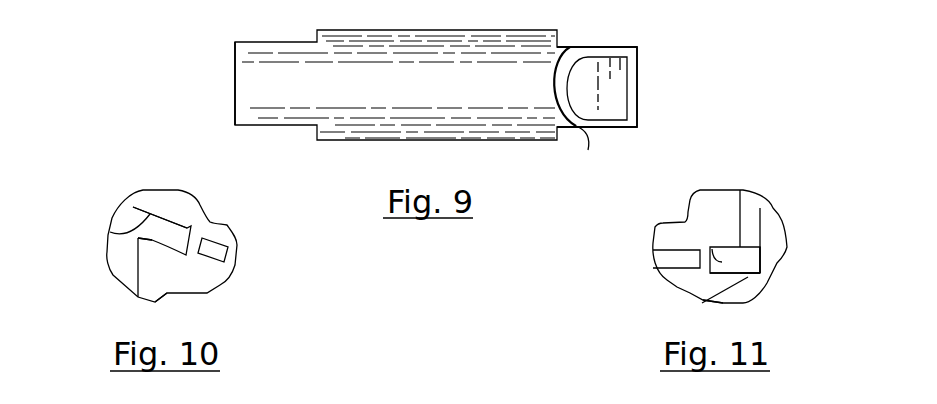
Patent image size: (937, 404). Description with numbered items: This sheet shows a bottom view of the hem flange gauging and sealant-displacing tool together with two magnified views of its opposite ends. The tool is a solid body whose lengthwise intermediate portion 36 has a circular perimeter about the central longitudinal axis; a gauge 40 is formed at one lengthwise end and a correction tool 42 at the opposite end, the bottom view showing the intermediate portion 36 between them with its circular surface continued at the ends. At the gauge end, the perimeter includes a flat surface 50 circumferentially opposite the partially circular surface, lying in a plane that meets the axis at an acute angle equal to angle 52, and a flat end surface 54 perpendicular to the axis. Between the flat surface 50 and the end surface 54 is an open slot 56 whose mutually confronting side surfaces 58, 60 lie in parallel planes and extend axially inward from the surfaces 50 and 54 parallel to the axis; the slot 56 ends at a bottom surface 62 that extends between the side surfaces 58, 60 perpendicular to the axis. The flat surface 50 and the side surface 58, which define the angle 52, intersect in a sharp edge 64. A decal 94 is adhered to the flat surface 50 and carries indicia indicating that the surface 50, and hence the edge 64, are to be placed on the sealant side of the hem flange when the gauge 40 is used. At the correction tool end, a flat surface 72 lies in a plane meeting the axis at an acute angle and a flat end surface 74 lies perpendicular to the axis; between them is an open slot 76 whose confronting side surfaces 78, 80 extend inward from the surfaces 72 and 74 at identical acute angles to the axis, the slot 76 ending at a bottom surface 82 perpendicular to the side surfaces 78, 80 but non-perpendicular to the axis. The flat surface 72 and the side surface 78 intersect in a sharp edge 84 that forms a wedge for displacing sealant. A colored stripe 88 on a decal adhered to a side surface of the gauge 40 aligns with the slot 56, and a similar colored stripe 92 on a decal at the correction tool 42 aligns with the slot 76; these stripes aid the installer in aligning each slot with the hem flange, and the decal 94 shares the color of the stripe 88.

In FIG. 9, the lengthwise intermediate portion 36 is at (448, 103).
In FIG. 9, the gauge 40 is at (669, 51).
In FIG. 9, the correction tool 42 is at (220, 56).
In FIG. 9, the flat surface 50 is at (590, 151).
In FIG. 11, the flat surface 50 is at (727, 293).
In FIG. 11, the angle 52 is at (733, 277).
In FIG. 9, the flat end surface 54 is at (637, 105).
In FIG. 11, the flat end surface 54 is at (762, 208).
In FIG. 11, the open slot 56 is at (735, 260).
In FIG. 11, the side surface 58 is at (760, 265).
In FIG. 11, the side surface 60 is at (740, 272).
In FIG. 11, the bottom surface 62 is at (730, 260).
In FIG. 11, the sharp edge 64 is at (760, 273).
In FIG. 10, the flat surface 72 is at (162, 195).
In FIG. 9, the flat end surface 74 is at (235, 80).
In FIG. 10, the flat end surface 74 is at (138, 273).
In FIG. 10, the open slot 76 is at (165, 235).
In FIG. 10, the side surface 78 is at (110, 231).
In FIG. 10, the side surface 80 is at (150, 227).
In FIG. 10, the bottom surface 82 is at (185, 228).
In FIG. 10, the sharp edge 84 is at (150, 218).
In FIG. 11, the colored stripe 88 is at (672, 258).
In FIG. 10, the colored stripe 92 is at (222, 250).
In FIG. 9, the decal 94 is at (595, 70).